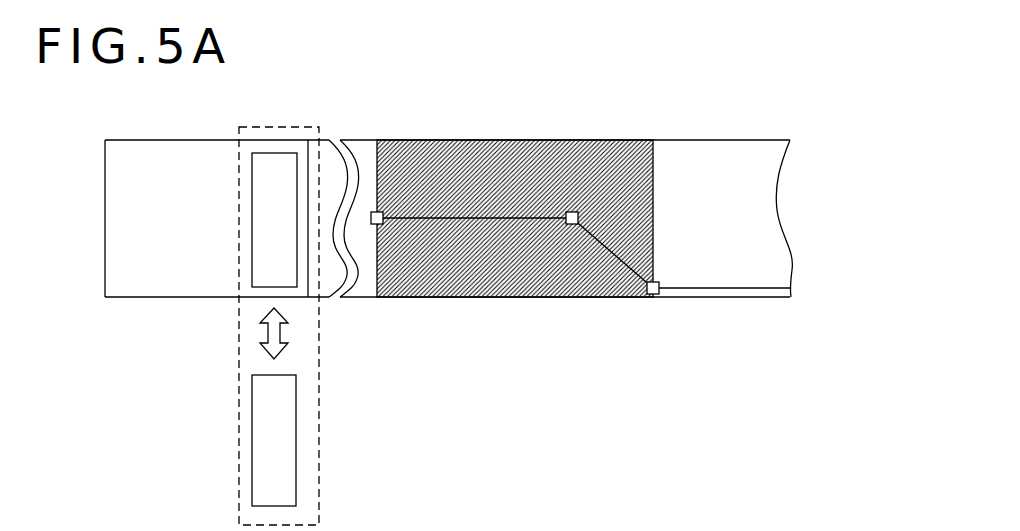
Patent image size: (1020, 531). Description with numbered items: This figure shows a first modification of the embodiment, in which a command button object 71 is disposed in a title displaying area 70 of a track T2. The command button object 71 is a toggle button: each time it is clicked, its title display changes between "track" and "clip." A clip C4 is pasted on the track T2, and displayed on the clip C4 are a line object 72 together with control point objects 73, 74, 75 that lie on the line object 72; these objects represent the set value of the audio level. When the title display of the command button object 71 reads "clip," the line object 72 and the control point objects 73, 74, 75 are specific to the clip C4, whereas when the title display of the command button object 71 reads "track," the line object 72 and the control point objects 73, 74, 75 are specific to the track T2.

The title displaying area 70 is at (163, 167).
The command button object 71 is at (297, 267).
The line object 72 is at (483, 212).
The control point object 73 is at (373, 211).
The control point object 74 is at (570, 226).
The control point object 75 is at (652, 297).
The clip C4 is at (608, 173).
The track T2 is at (748, 228).